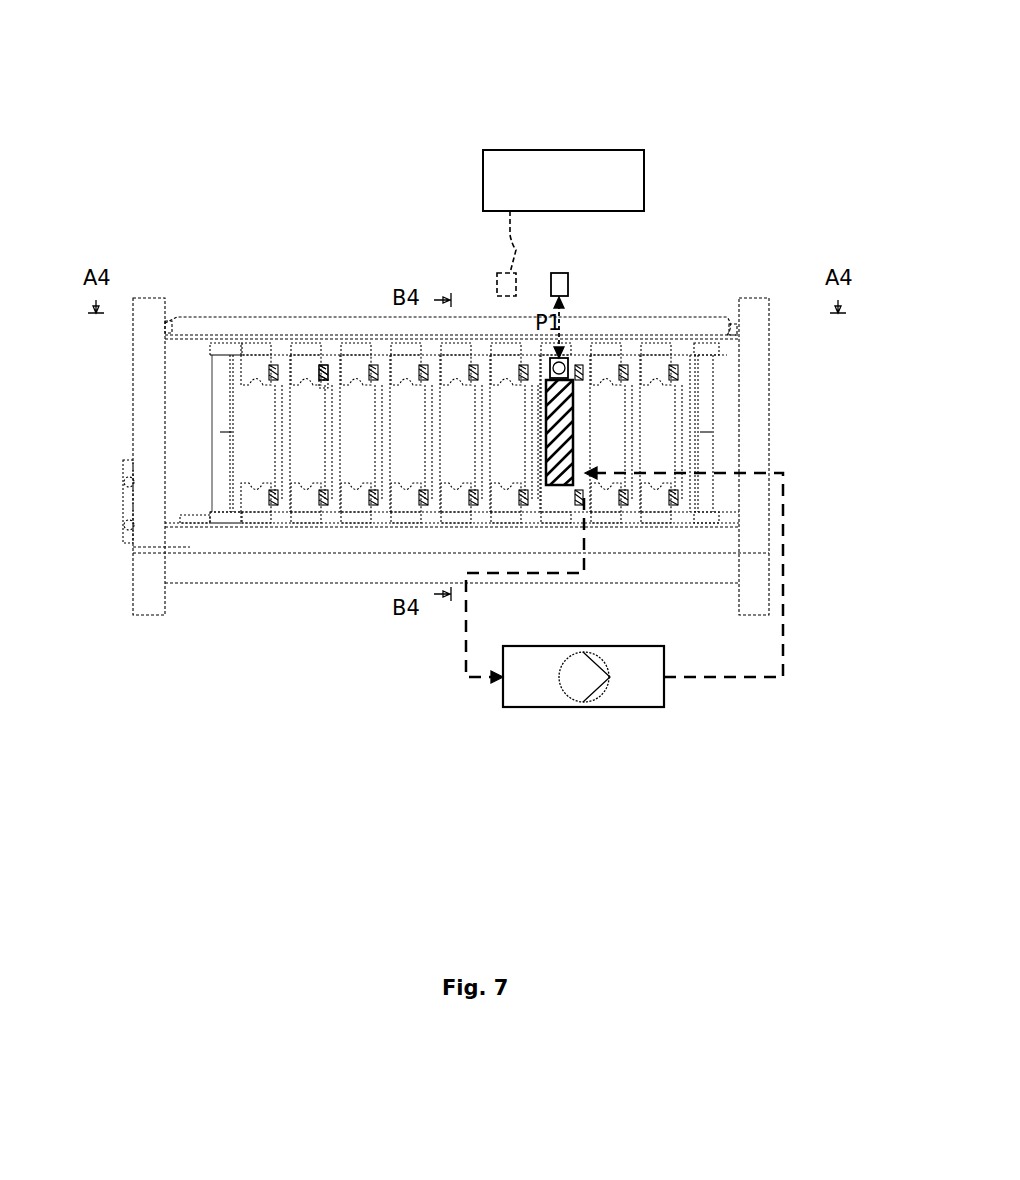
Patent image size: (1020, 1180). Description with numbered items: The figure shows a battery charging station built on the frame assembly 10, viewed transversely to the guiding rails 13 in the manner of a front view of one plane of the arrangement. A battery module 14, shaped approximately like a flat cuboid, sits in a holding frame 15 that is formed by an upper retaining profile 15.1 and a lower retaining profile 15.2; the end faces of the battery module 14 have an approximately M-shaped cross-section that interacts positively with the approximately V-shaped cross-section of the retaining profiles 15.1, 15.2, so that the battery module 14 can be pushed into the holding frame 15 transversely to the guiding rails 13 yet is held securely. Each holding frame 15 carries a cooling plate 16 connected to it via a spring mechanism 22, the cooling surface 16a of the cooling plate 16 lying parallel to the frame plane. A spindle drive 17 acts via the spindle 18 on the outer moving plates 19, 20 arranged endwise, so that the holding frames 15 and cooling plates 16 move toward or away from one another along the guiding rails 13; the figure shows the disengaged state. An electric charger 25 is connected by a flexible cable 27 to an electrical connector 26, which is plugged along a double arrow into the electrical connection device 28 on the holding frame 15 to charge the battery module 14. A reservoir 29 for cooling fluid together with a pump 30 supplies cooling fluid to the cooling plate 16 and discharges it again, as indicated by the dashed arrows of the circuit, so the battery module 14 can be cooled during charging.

The frame assembly 10 is at (743, 269).
The guiding rails 13 is at (587, 345).
The battery module 14 is at (582, 432).
The holding frame 15 is at (460, 367).
The upper retaining profile 15.1 is at (407, 368).
The lower retaining profile 15.2 is at (407, 497).
The cooling plate 16 is at (333, 378).
The cooling surface 16a is at (327, 388).
The spindle drive 17 is at (117, 490).
The spindle 18 is at (198, 523).
The outer moving plate 19 is at (232, 420).
The outer moving plate 20 is at (694, 460).
The spring mechanism 22 is at (321, 352).
The electric charger 25 is at (550, 150).
The electrical connector 26 is at (560, 273).
The flexible cable 27 is at (563, 273).
The electrical connection device 28 is at (546, 372).
The reservoir 29 is at (624, 648).
The pump 30 is at (573, 682).